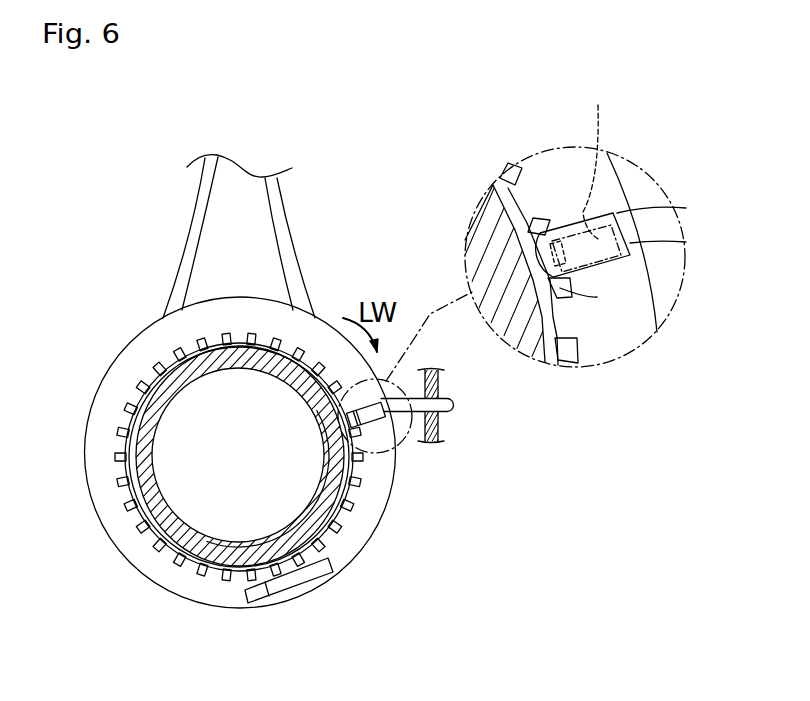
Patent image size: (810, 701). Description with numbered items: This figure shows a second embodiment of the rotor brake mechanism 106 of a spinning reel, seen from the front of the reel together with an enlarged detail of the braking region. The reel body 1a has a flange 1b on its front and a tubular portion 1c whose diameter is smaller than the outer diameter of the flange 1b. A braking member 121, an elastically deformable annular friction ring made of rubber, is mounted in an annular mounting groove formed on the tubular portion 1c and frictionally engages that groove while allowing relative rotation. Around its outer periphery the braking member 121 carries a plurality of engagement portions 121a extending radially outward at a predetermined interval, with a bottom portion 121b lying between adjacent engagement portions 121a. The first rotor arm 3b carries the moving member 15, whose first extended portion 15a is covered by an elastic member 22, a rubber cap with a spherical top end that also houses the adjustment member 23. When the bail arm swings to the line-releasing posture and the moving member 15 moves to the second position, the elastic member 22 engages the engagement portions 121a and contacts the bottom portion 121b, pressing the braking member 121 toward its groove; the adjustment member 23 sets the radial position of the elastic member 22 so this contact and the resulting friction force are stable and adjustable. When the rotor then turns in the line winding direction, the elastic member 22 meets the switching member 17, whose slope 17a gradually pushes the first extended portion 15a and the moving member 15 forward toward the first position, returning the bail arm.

The reel body 1a is at (183, 290).
The flange 1b is at (139, 364).
The tubular portion 1c is at (139, 418).
The braking member 121 is at (120, 502).
The engagement portions 121a is at (572, 255).
The bottom portion 121b is at (577, 257).
The rotor brake mechanism 106 is at (370, 432).
The first rotor arm 3b is at (439, 428).
The switching member 17 is at (302, 597).
The slope 17a is at (313, 575).
The elastic member 22 is at (607, 193).
The adjustment member 23 is at (557, 240).
The moving member 15 is at (673, 249).
The first extended portion 15a is at (605, 157).